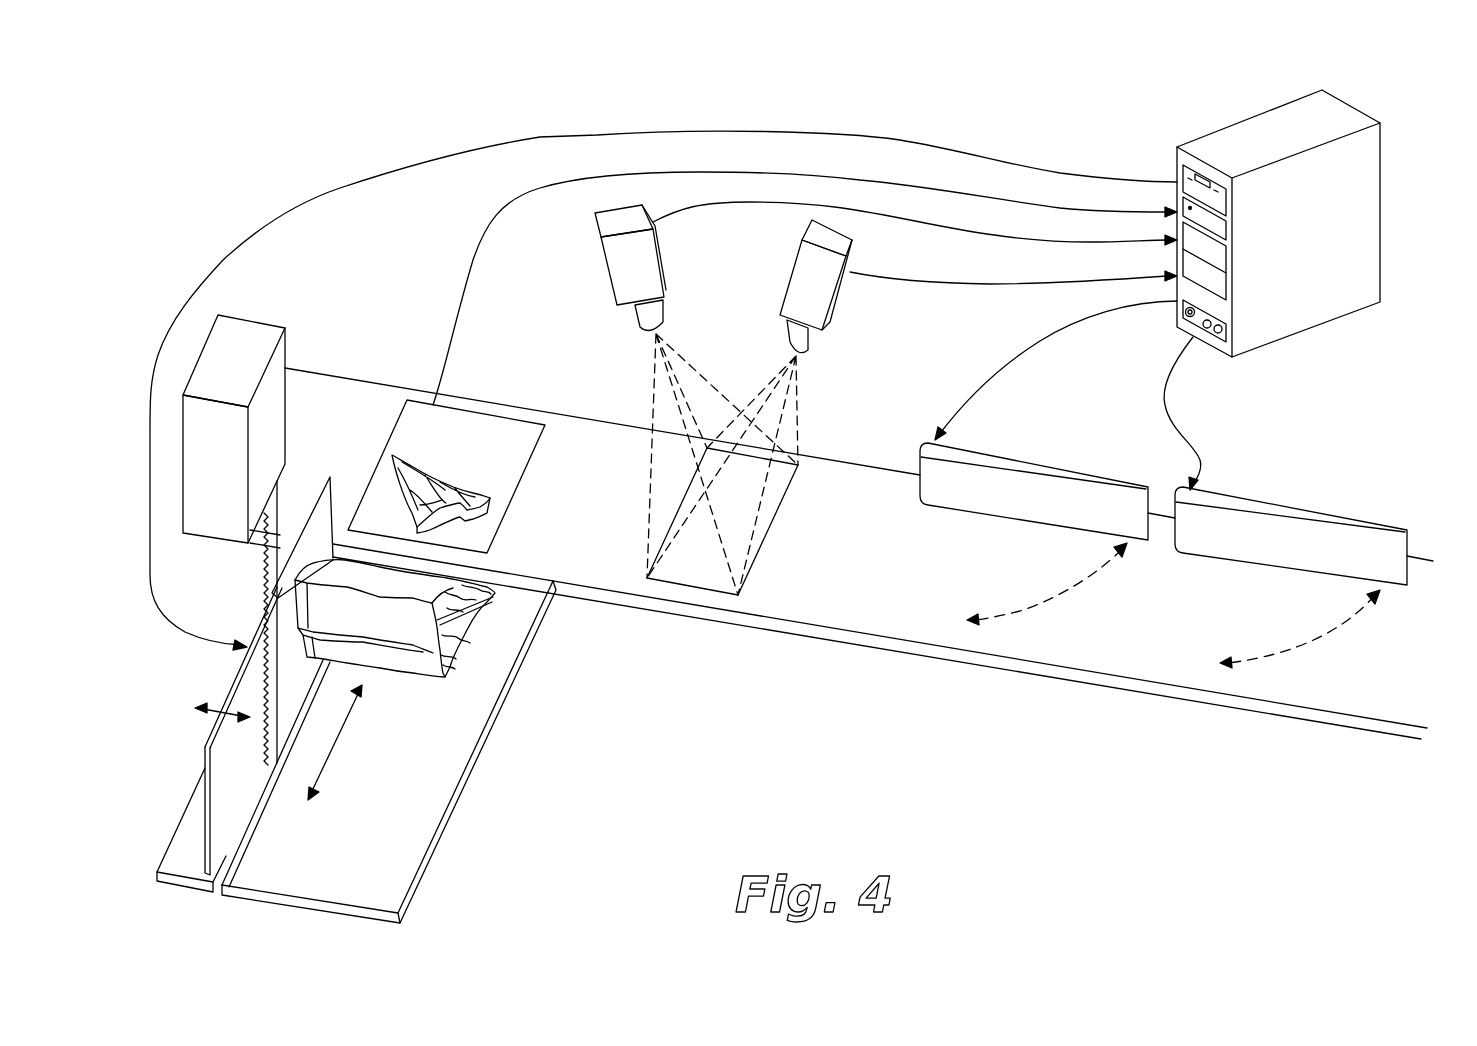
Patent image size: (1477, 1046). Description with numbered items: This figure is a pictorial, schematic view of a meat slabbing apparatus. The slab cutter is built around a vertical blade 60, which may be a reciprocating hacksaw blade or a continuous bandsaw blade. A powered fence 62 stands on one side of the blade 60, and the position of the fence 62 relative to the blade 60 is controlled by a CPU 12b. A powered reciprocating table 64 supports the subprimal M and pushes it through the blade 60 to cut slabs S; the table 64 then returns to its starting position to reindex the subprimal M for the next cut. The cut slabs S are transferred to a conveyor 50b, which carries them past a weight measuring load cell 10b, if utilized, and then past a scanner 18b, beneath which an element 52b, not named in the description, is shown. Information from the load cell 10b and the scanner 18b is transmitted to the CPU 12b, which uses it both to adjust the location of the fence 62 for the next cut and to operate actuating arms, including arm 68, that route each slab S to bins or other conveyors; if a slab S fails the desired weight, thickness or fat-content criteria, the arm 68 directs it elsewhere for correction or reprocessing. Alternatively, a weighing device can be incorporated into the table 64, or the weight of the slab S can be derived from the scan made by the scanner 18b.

The CPU 12b is at (1212, 148).
The scanner 18b is at (632, 275).
The weight measuring load cell 10b is at (508, 428).
The slab S is at (447, 490).
The vertical blade 60 is at (262, 576).
The actuating arm 68 is at (1322, 531).
The conveyor 50b is at (1106, 660).
The scanning platform 52b is at (700, 580).
The powered fence 62 is at (247, 687).
The powered reciprocating table 64 is at (372, 868).
The subprimal M is at (470, 620).